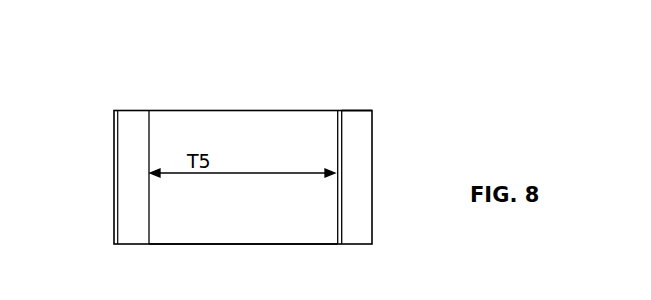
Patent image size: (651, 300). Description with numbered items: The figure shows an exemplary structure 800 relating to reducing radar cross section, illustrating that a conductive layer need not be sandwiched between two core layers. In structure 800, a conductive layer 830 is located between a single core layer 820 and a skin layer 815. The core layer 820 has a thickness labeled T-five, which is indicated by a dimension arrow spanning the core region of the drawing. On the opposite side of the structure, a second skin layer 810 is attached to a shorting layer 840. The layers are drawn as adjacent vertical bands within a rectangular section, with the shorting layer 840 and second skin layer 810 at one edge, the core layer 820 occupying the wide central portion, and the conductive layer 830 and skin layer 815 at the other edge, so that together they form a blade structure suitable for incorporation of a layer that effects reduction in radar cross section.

The structure 800 is at (118, 60).
The second skin layer 810 is at (135, 110).
The skin layer 815 is at (355, 111).
The core layer 820 is at (182, 244).
The conductive layer 830 is at (338, 244).
The shorting layer 840 is at (114, 150).